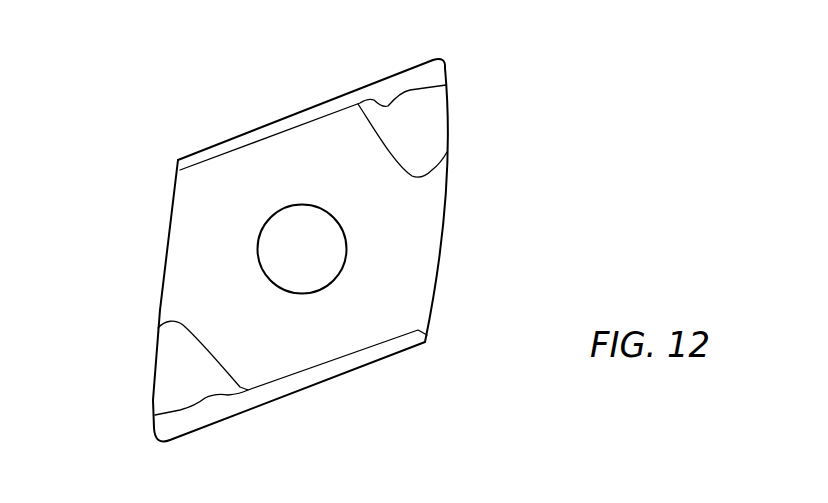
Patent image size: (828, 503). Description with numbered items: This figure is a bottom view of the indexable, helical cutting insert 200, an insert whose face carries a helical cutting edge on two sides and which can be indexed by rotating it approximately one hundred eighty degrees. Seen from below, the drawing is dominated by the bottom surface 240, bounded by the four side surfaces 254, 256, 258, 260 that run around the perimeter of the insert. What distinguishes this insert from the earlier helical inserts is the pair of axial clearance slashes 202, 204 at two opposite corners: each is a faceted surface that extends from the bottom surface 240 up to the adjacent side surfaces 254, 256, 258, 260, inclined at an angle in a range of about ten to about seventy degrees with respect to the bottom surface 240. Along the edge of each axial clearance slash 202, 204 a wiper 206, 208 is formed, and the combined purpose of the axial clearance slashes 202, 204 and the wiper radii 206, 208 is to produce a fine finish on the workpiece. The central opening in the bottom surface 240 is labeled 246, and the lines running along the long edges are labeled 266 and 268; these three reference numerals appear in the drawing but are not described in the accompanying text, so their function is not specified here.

The helical cutting insert 200 is at (302, 253).
The axial clearance slash 202 is at (425, 143).
The axial clearance slash 204 is at (175, 357).
The wiper 206 is at (445, 64).
The wiper 208 is at (152, 413).
The bottom surface 240 is at (383, 280).
The central mounting hole 246 is at (262, 247).
The side surface 254 is at (158, 234).
The side surface 256 is at (443, 260).
The side surface 258 is at (257, 434).
The side surface 260 is at (367, 67).
The first land edge 266 is at (305, 390).
The second land edge 268 is at (313, 102).